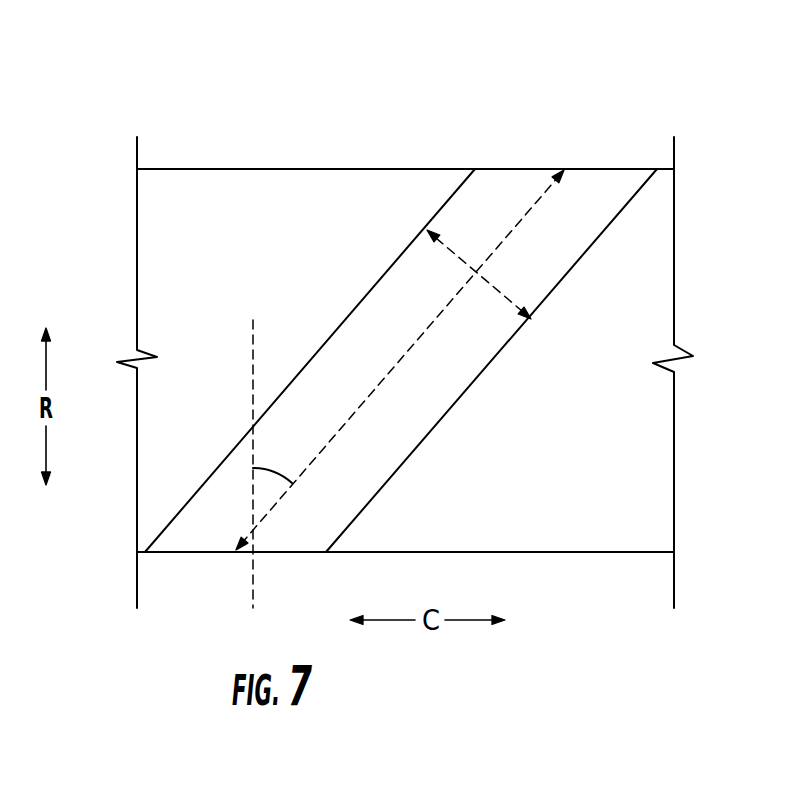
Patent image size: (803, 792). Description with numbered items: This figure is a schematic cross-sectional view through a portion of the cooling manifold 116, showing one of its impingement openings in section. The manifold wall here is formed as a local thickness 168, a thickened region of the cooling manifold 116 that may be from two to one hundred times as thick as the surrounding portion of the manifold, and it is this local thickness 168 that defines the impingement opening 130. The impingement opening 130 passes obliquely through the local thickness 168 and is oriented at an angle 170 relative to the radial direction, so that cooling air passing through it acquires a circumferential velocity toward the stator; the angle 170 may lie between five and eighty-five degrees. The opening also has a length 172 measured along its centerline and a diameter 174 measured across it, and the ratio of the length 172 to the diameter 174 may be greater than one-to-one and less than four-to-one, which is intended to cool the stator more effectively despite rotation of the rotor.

The cooling manifold 116 is at (150, 93).
The local thickness 168 is at (207, 195).
The impingement opening 130 is at (372, 328).
The angle 170 is at (277, 470).
The length 172 is at (408, 348).
The diameter 174 is at (502, 293).